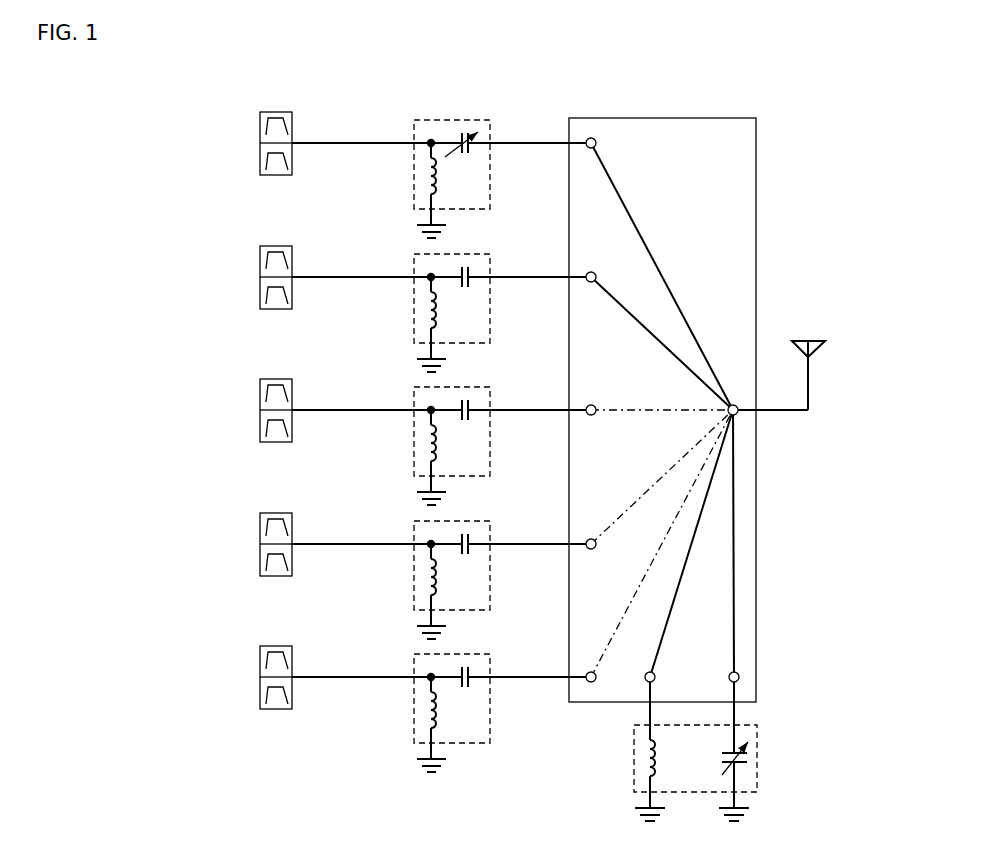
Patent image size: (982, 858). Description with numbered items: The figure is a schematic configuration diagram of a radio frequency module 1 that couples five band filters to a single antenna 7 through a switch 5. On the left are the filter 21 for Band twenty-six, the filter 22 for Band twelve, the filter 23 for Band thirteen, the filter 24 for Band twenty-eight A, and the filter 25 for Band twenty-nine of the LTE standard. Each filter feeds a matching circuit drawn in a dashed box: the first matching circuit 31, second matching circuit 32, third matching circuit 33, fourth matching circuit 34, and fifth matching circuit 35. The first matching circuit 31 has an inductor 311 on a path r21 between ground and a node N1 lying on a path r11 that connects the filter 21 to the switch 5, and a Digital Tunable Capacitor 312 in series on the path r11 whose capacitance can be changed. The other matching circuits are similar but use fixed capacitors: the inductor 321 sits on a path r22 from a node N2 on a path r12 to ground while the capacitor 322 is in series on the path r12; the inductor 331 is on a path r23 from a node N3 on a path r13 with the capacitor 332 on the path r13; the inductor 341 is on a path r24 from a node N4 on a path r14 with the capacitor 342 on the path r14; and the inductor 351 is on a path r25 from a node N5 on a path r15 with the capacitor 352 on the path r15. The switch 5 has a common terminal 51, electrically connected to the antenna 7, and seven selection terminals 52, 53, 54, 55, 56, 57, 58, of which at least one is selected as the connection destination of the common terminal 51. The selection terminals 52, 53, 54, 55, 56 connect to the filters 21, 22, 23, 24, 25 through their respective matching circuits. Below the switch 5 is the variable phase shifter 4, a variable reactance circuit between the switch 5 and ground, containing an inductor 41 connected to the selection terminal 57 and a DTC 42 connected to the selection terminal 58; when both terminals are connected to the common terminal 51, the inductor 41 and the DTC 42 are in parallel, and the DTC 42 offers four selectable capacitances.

The radio frequency module 1 is at (787, 103).
The variable phase shifter 4 is at (770, 728).
The switch 5 is at (753, 158).
The antenna 7 is at (783, 358).
The filter 21 is at (275, 112).
The filter 22 is at (275, 246).
The filter 23 is at (275, 379).
The filter 24 is at (275, 513).
The filter 25 is at (275, 646).
The first matching circuit 31 is at (457, 165).
The second matching circuit 32 is at (457, 299).
The third matching circuit 33 is at (457, 432).
The fourth matching circuit 34 is at (457, 566).
The fifth matching circuit 35 is at (457, 699).
The inductor 311 is at (427, 172).
The Digital Tunable Capacitor 312 is at (475, 152).
The inductor 321 is at (427, 306).
The capacitor 322 is at (475, 286).
The inductor 331 is at (427, 439).
The capacitor 332 is at (475, 419).
The inductor 341 is at (427, 573).
The capacitor 342 is at (475, 553).
The inductor 351 is at (427, 706).
The capacitor 352 is at (475, 686).
The inductor 41 is at (640, 755).
The DTC 42 is at (753, 760).
The common terminal 51 is at (740, 413).
The selection terminal 52 is at (597, 142).
The selection terminal 53 is at (593, 271).
The selection terminal 54 is at (592, 416).
The selection terminal 55 is at (591, 538).
The selection terminal 56 is at (589, 671).
The selection terminal 57 is at (648, 671).
The selection terminal 58 is at (731, 672).
The path r11 is at (325, 141).
The path r12 is at (325, 275).
The path r13 is at (325, 408).
The path r14 is at (325, 542).
The path r15 is at (325, 675).
The path r21 is at (432, 202).
The path r22 is at (432, 336).
The path r23 is at (432, 469).
The path r24 is at (432, 603).
The path r25 is at (432, 736).
The node N1 is at (430, 142).
The node N2 is at (430, 276).
The node N3 is at (430, 409).
The node N4 is at (430, 543).
The node N5 is at (430, 676).